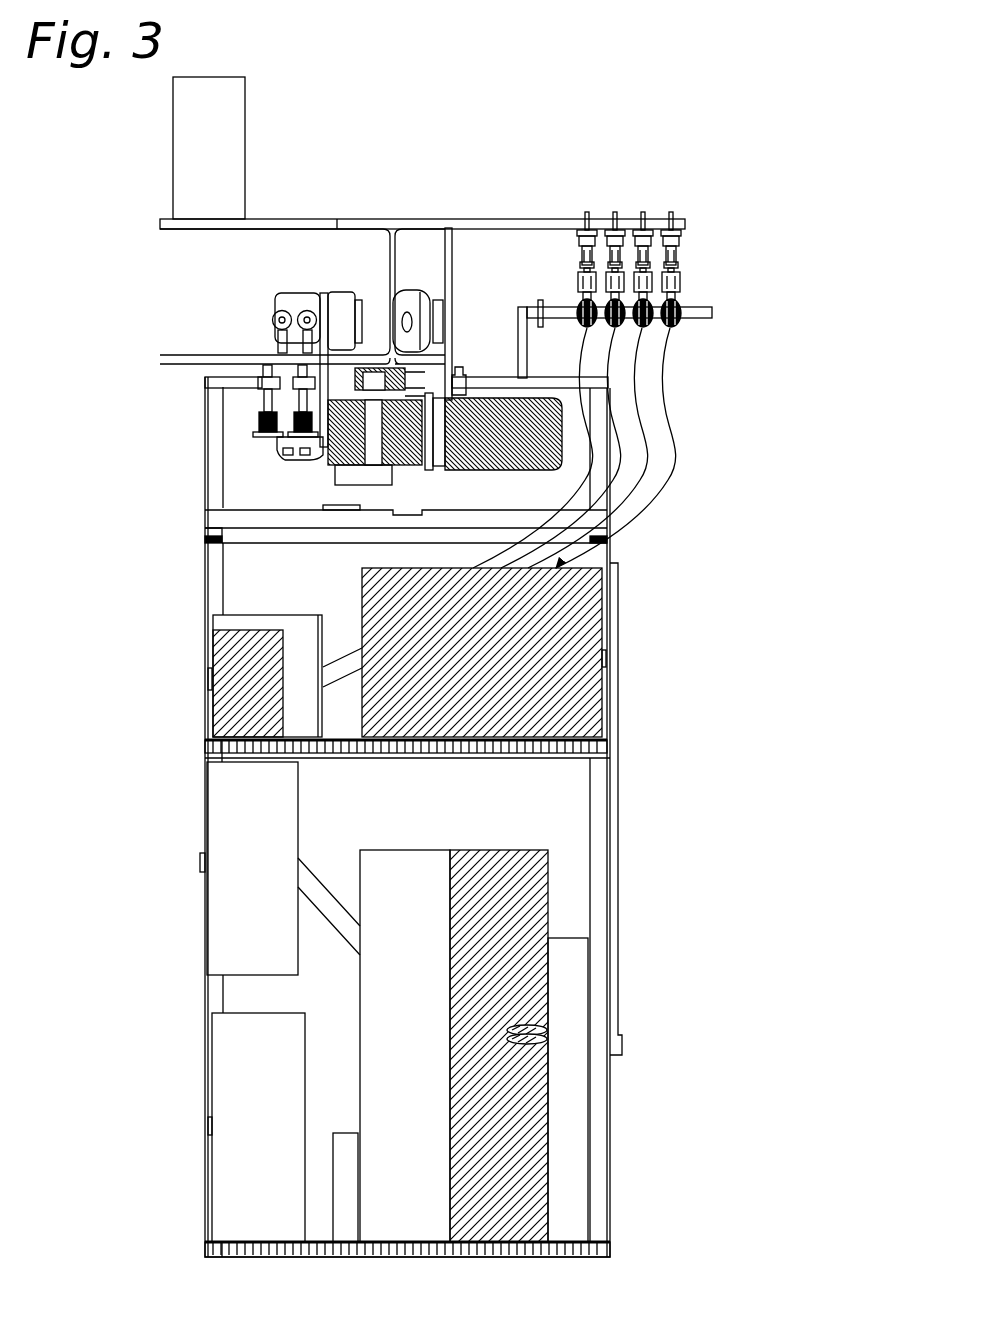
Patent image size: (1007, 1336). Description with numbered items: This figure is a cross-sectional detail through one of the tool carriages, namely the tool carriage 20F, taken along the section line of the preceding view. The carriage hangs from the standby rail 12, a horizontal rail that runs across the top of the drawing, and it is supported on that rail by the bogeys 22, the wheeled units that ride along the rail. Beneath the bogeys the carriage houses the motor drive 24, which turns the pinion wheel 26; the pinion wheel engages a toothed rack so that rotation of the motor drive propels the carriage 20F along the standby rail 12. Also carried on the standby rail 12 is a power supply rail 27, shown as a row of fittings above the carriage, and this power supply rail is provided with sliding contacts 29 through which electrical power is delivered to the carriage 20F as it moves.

The standby rail 12 is at (450, 216).
The bogeys 22 is at (450, 310).
The motor drive 24 is at (478, 386).
The pinion wheel 26 is at (349, 392).
The power supply rail 27 is at (690, 242).
The sliding contacts 29 is at (686, 322).
The tool carriage 20F is at (615, 588).